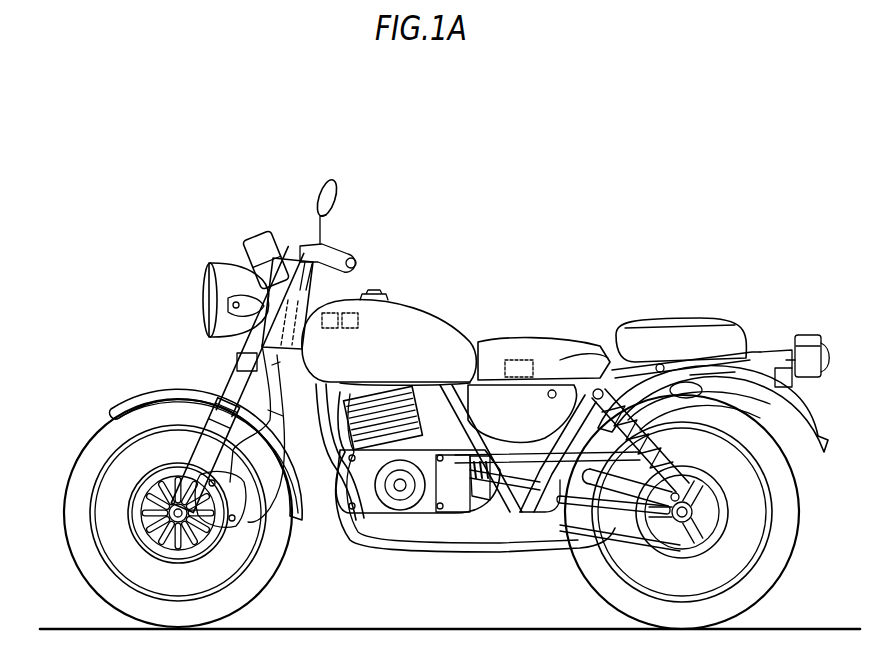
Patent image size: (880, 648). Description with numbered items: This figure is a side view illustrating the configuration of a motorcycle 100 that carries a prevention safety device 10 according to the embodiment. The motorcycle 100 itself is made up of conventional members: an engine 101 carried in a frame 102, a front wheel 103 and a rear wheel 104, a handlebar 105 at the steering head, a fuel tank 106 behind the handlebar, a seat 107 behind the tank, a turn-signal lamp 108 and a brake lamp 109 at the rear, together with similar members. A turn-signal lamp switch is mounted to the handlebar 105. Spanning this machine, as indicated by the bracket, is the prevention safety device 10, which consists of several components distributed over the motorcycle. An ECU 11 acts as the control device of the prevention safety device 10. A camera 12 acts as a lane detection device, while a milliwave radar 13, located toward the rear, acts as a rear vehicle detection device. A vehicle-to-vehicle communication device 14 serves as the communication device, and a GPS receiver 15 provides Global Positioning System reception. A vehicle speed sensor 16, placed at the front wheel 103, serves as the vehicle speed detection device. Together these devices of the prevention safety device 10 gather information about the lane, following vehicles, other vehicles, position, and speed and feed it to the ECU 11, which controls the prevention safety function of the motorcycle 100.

The motorcycle 100 is at (716, 124).
The prevention safety device 10 is at (775, 147).
The ECU 11 is at (519, 359).
The camera 12 is at (237, 362).
The milliwave radar 13 is at (778, 362).
The vehicle-to-vehicle communication device 14 is at (333, 313).
The GPS receiver 15 is at (352, 313).
The vehicle speed sensor 16 is at (165, 472).
The engine 101 is at (368, 504).
The frame 102 is at (470, 482).
The front wheel 103 is at (85, 541).
The rear wheel 104 is at (782, 540).
The handlebar 105 is at (344, 262).
The fuel tank 106 is at (333, 353).
The seat 107 is at (566, 336).
The turn-signal lamp 108 is at (683, 382).
The brake lamp 109 is at (808, 334).